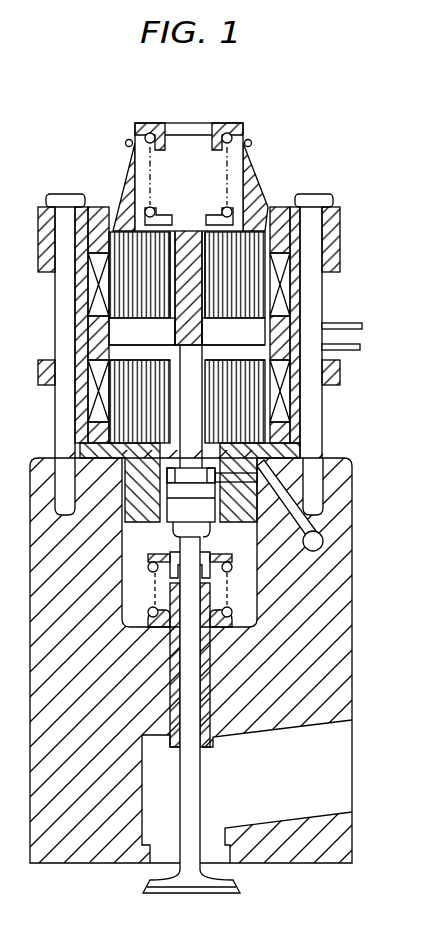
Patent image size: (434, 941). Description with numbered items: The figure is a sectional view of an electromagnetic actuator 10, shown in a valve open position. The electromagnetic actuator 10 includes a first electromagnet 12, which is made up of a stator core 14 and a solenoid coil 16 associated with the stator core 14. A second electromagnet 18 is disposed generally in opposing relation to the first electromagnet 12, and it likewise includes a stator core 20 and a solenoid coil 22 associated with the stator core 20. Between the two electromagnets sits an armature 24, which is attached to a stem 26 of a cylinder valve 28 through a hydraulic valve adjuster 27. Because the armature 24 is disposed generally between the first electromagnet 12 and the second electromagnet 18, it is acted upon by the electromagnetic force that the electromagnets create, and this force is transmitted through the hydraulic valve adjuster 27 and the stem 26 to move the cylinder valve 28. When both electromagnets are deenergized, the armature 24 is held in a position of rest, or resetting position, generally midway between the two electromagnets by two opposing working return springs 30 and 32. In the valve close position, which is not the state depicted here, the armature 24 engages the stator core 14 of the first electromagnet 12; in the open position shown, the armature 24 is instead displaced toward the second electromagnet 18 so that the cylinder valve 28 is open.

The electromagnetic actuator 10 is at (272, 73).
The first electromagnet 12 is at (95, 160).
The stator core 14 is at (268, 205).
The solenoid coil 16 is at (361, 285).
The second electromagnet 18 is at (258, 432).
The stator core 20 is at (125, 430).
The solenoid coil 22 is at (376, 390).
The armature 24 is at (260, 353).
The stem 26 is at (190, 665).
The hydraulic valve adjuster 27 is at (197, 513).
The cylinder valve 28 is at (235, 884).
The return spring 30 is at (233, 160).
The return spring 32 is at (381, 581).